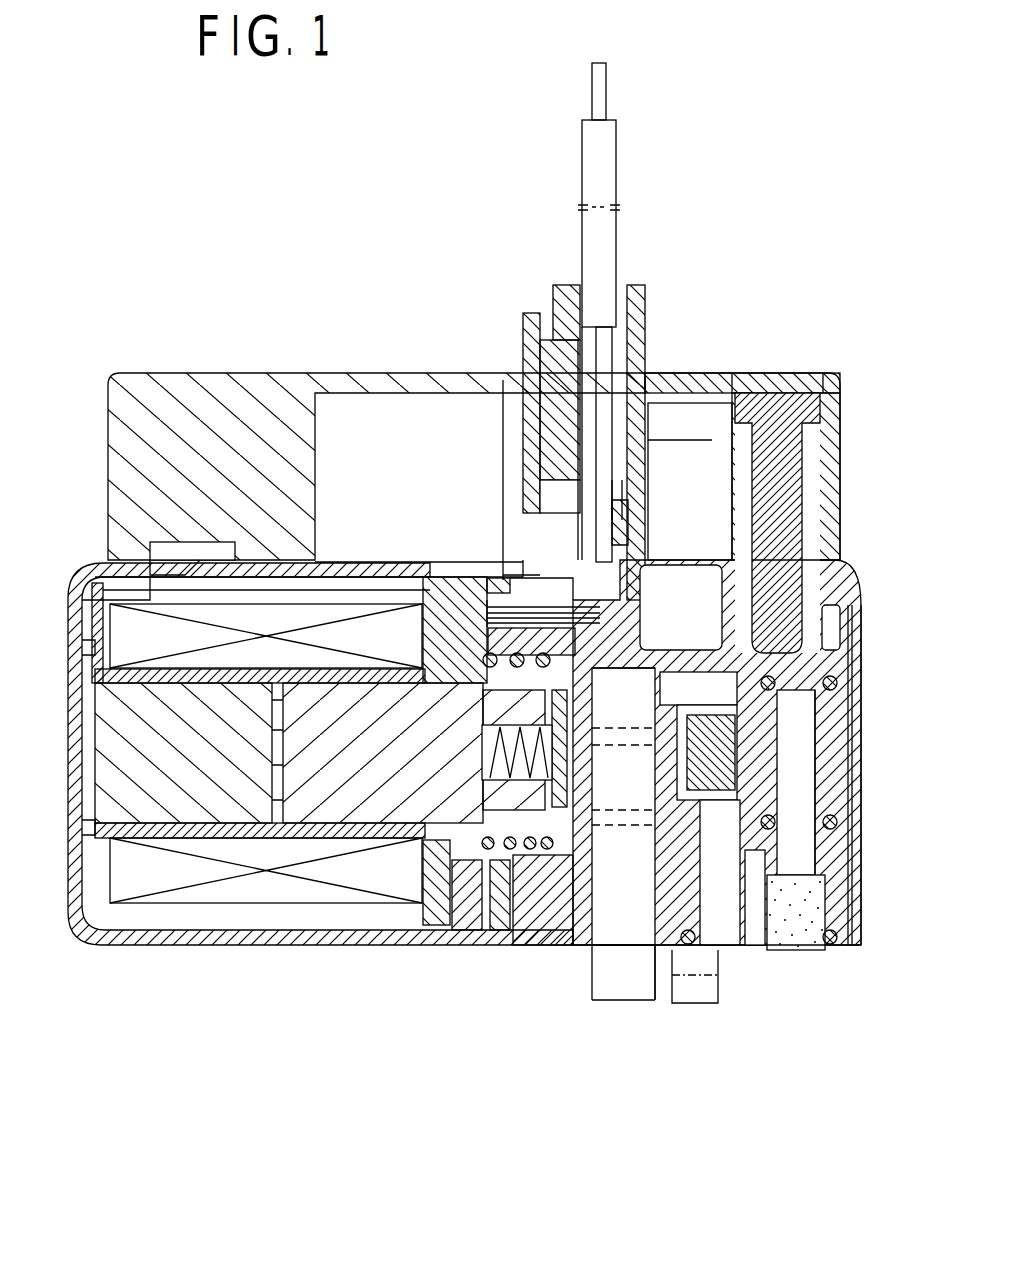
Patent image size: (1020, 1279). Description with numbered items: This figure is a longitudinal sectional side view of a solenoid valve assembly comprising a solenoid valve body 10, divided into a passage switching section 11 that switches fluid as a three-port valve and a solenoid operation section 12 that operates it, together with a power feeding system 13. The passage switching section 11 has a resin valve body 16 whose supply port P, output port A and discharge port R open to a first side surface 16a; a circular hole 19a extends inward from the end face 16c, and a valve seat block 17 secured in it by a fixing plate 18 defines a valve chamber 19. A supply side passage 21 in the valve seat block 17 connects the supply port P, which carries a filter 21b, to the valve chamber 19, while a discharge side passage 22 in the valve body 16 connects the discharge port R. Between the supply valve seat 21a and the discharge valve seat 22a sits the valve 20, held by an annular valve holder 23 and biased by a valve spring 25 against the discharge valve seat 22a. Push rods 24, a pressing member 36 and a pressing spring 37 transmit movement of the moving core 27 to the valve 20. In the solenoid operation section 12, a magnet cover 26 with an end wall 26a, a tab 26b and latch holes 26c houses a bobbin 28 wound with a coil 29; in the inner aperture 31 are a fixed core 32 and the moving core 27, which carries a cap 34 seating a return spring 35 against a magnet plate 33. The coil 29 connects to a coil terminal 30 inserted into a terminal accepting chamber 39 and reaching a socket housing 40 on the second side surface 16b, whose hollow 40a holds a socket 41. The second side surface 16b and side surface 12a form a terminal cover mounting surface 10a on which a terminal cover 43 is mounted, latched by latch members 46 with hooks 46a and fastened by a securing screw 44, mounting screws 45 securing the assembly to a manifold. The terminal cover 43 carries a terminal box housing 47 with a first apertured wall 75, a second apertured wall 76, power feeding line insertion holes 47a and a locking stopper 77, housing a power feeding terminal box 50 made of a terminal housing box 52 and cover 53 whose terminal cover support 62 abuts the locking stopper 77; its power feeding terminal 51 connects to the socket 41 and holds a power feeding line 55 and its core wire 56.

The solenoid valve body 10 is at (415, 1070).
The terminal cover mounting surface 10a is at (460, 555).
The passage switching section 11 is at (735, 1052).
The solenoid operation section 12 is at (265, 990).
The side surface of the solenoid operation section 12a is at (120, 545).
The power feeding system 13 is at (452, 240).
The valve body 16 is at (835, 600).
The first side surface 16a is at (815, 960).
The second side surface 16b is at (770, 530).
The end face 16c is at (838, 960).
The valve seat block 17 is at (852, 710).
The fixing plate 18 is at (857, 920).
The valve chamber 19 is at (832, 630).
The hole 19a is at (808, 565).
The valve 20 is at (790, 745).
The supply side passage 21 is at (795, 790).
The supply valve seat 21a is at (845, 760).
The filter 21b is at (790, 960).
The discharge side passage 22 is at (612, 900).
The discharge valve seat 22a is at (720, 945).
The valve holder 23 is at (668, 945).
The push rods 24 is at (628, 745).
The valve spring 25 is at (818, 680).
The magnet cover 26 is at (402, 945).
The end wall 26a is at (75, 930).
The tab 26b is at (553, 950).
The latch holes 26c is at (275, 572).
The moving core 27 is at (318, 748).
The bobbin 28 is at (128, 920).
The coil 29 is at (345, 880).
The inner aperture 31 is at (185, 880).
The fixed core 32 is at (235, 880).
The magnet plate 33 is at (455, 930).
The cap 34 is at (545, 935).
The return spring 35 is at (530, 945).
The pressing member 36 is at (575, 945).
The pressing spring 37 is at (505, 800).
The coil terminals 30 is at (510, 585).
The terminal accepting chamber 39 is at (545, 600).
The socket housing 40 is at (630, 530).
The hollow 40a is at (640, 620).
The socket 41 is at (660, 560).
The terminal cover 43 is at (822, 455).
The securing screw 44 is at (800, 425).
The mounting screws 45 is at (698, 1003).
The latch members 46 is at (185, 565).
The hooks 46a is at (130, 580).
The terminal box housing 47 is at (548, 335).
The power feeding line insertion holes 47a is at (640, 292).
The power feeding terminal box 50 is at (645, 255).
The power feeding terminal 51 is at (625, 495).
The terminal housing box 52 is at (503, 380).
The cover 53 is at (625, 360).
The power feeding line 55 is at (617, 170).
The core wire 56 is at (607, 80).
The terminal cover support 62 is at (585, 330).
The first apertured wall 75 is at (535, 330).
The second apertured wall 76 is at (645, 320).
The locking stopper 77 is at (575, 290).
The output port A is at (752, 900).
The supply port P is at (800, 945).
The discharge port R is at (640, 945).